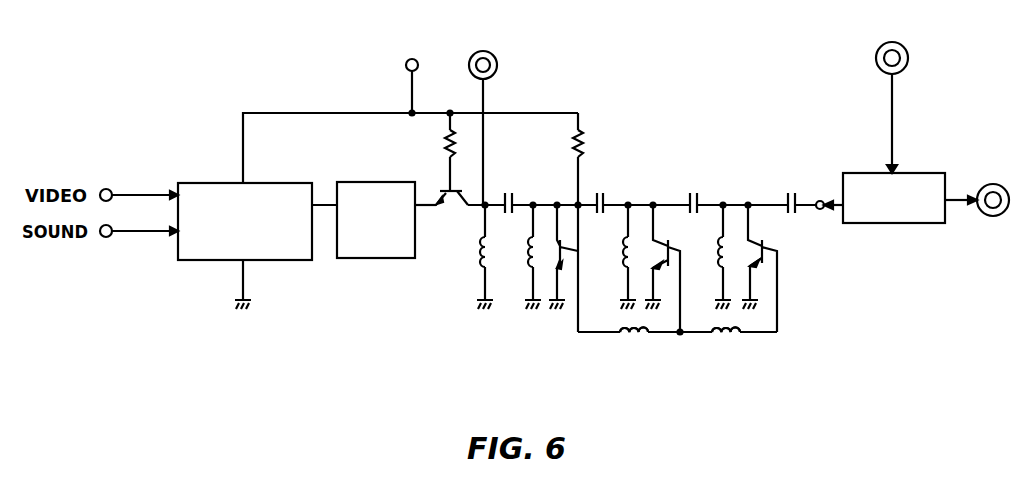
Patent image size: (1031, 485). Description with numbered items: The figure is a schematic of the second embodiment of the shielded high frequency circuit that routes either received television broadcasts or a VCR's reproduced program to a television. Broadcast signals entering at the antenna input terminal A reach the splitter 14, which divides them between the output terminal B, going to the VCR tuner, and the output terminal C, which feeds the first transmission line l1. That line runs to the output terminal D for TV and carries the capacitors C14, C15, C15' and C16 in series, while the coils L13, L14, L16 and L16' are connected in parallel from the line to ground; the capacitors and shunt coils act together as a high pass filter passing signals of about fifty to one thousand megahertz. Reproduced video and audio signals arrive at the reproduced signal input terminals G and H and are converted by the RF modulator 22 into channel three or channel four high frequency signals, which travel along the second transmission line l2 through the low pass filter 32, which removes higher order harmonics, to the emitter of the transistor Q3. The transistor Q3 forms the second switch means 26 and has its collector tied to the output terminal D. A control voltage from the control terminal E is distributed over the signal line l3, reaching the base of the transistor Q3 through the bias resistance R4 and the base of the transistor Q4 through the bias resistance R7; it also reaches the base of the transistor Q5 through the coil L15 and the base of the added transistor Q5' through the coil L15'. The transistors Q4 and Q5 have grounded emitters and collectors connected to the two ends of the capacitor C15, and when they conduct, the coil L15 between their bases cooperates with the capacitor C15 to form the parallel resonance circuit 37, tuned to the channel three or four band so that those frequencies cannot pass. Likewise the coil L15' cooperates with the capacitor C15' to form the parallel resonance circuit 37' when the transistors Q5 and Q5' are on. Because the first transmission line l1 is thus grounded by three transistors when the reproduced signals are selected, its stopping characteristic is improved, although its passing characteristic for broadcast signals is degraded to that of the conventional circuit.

The RF modulator 22 is at (210, 260).
The low pass filter 32 is at (370, 258).
The second switch means 26 is at (446, 190).
The splitter 14 is at (910, 173).
The parallel resonance circuit 37 is at (613, 330).
The parallel resonance circuit 37' is at (716, 337).
The antenna input terminal A is at (897, 41).
The output terminal B is at (998, 185).
The output terminal C is at (823, 210).
The output terminal for TV D is at (497, 68).
The control terminal E is at (415, 58).
The reproduced signal input terminal G is at (103, 189).
The reproduced signal input terminal H is at (104, 237).
The first transmission line l1 is at (753, 201).
The second transmission line l2 is at (438, 232).
The signal line l3 is at (570, 113).
The bias resistance R4 is at (463, 151).
The bias resistance R7 is at (594, 222).
The capacitor C14 is at (502, 193).
The capacitor C15 is at (614, 190).
The capacitor C15' is at (702, 190).
The capacitor C16 is at (804, 186).
The coil L13 is at (482, 246).
The coil L14 is at (530, 244).
The coil L15 is at (638, 351).
The coil L15' is at (734, 350).
The coil L16 is at (611, 256).
The coil L16' is at (707, 256).
The transistor Q3 is at (452, 205).
The transistor Q4 is at (568, 232).
The transistor Q5 is at (670, 268).
The transistor Q5' is at (771, 268).